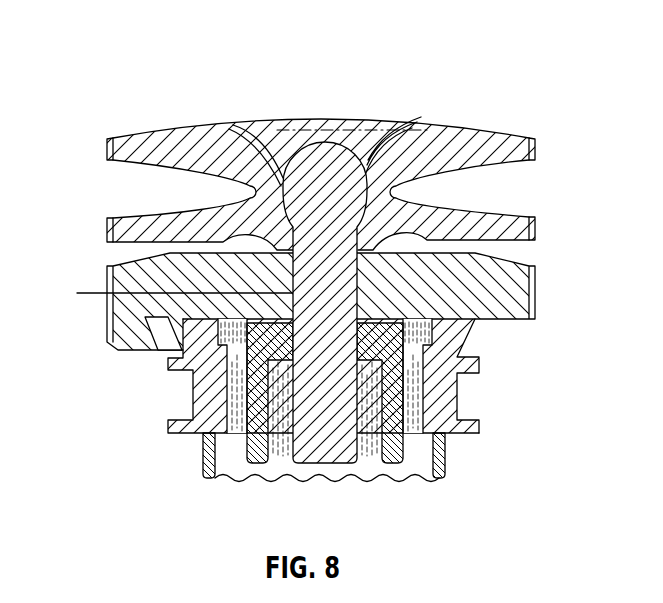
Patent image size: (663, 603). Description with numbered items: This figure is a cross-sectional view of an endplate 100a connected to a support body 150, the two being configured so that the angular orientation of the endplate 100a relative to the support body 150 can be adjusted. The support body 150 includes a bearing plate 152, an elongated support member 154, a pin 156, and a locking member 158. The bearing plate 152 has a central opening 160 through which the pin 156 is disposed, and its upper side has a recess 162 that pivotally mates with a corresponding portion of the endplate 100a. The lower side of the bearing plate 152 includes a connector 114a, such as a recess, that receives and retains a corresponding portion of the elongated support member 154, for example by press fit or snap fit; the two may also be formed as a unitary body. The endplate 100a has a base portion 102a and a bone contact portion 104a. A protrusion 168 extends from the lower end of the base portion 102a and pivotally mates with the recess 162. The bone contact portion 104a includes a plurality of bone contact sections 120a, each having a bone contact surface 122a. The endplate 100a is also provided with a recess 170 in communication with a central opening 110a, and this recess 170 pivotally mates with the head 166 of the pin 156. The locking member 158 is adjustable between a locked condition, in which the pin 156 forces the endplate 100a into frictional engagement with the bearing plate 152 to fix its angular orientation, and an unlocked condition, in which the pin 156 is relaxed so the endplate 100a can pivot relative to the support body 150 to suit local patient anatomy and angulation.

The endplate 100a is at (147, 60).
The bone contact portion 104a is at (537, 139).
The base portion 102a is at (533, 228).
The bone contact sections 120a is at (105, 139).
The bone contact surface 122a is at (320, 127).
The head 166 is at (330, 183).
The recess 170 is at (285, 172).
The pin 156 is at (339, 143).
The recess 162 is at (395, 210).
The protrusion 168 is at (262, 249).
The bearing plate 152 is at (538, 289).
The central opening 110a is at (158, 295).
The connector 114a is at (165, 337).
The elongated support member 154 is at (192, 400).
The central opening 160 is at (430, 318).
The support body 150 is at (200, 462).
The locking member 158 is at (403, 450).